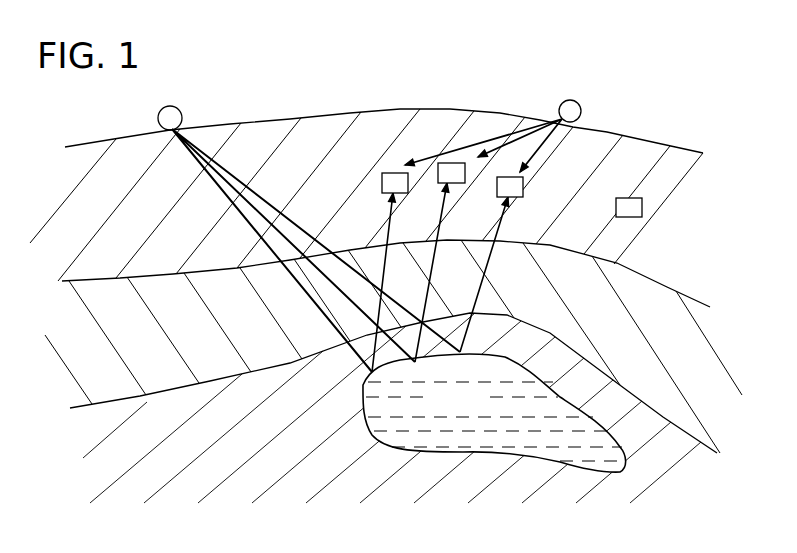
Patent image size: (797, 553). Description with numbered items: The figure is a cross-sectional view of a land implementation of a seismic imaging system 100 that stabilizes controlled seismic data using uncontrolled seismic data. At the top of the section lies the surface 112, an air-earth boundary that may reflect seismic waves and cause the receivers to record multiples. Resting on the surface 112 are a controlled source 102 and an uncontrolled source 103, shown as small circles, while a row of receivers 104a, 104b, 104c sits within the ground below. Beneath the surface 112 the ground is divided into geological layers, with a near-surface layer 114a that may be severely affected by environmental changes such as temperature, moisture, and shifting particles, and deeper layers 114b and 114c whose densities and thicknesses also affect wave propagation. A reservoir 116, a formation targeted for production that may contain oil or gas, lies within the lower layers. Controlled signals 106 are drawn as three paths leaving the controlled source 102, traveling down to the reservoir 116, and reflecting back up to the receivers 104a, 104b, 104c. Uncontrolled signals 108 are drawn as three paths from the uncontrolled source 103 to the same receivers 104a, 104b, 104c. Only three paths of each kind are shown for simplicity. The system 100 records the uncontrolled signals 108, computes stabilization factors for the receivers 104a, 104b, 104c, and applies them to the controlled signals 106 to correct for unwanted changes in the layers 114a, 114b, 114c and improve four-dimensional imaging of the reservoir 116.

The seismic imaging system 100 is at (512, 80).
The controlled source 102 is at (174, 106).
The uncontrolled source 103 is at (576, 101).
The receiver 104a is at (382, 181).
The receiver 104b is at (461, 183).
The receiver 104c is at (657, 233).
The controlled signals 106 is at (240, 182).
The uncontrolled signals 108 is at (540, 145).
The surface 112 is at (610, 132).
The near-surface layer 114a is at (695, 194).
The layer 114b is at (713, 369).
The layer 114c is at (710, 496).
The reservoir 116 is at (477, 410).